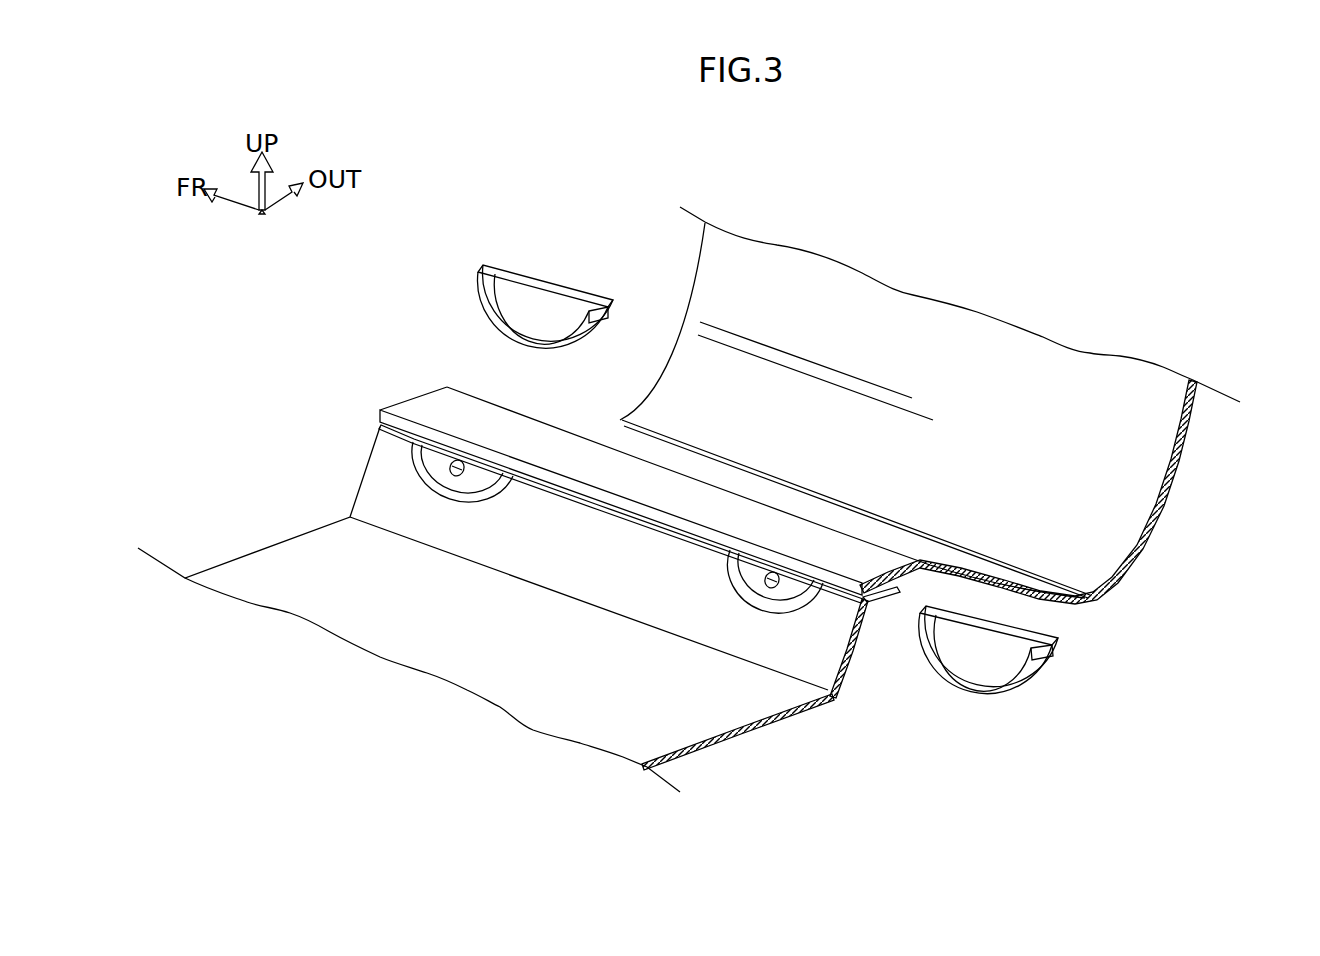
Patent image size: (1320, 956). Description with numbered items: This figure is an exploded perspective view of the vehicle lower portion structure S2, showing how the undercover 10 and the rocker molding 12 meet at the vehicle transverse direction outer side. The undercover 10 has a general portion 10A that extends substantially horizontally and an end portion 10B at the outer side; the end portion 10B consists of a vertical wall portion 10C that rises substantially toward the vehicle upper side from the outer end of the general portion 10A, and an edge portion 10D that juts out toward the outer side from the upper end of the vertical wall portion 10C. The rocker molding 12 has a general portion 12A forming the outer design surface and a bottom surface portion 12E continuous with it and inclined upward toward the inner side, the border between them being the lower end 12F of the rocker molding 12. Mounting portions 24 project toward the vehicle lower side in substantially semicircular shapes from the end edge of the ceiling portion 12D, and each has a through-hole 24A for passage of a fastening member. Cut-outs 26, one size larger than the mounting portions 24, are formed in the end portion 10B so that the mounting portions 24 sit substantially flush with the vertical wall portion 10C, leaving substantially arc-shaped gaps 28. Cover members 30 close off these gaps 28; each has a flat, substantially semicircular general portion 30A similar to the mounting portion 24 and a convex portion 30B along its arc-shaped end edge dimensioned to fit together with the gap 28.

The undercover 10 is at (560, 644).
The general portion 10A is at (731, 744).
The end portion 10B is at (912, 702).
The vertical wall portion 10C is at (845, 641).
The edge portion 10D is at (887, 606).
The rocker molding 12 is at (836, 435).
The general portion 12A is at (1192, 437).
The ceiling portion 12D is at (714, 497).
The bottom surface portion 12E is at (962, 558).
The lower end 12F is at (1105, 601).
The mounting portion 24 is at (438, 492).
The through-hole 24A is at (450, 465).
The cut-out 26 is at (447, 498).
The gap 28 is at (487, 497).
The cover member 30 is at (774, 462).
The general portion 30A is at (579, 291).
The convex portion 30B is at (485, 327).
The vehicle lower portion structure S2 is at (485, 222).